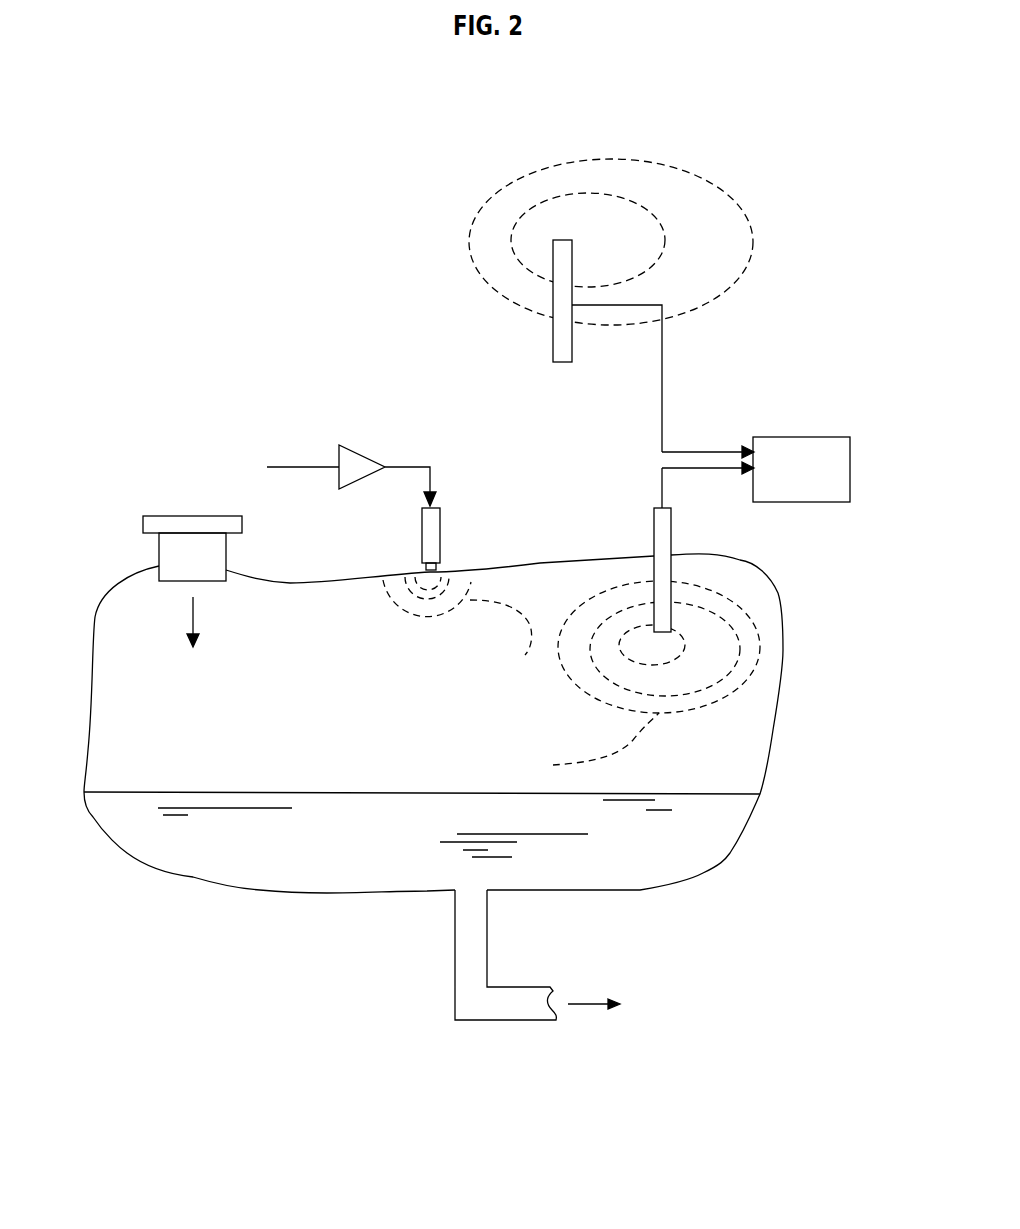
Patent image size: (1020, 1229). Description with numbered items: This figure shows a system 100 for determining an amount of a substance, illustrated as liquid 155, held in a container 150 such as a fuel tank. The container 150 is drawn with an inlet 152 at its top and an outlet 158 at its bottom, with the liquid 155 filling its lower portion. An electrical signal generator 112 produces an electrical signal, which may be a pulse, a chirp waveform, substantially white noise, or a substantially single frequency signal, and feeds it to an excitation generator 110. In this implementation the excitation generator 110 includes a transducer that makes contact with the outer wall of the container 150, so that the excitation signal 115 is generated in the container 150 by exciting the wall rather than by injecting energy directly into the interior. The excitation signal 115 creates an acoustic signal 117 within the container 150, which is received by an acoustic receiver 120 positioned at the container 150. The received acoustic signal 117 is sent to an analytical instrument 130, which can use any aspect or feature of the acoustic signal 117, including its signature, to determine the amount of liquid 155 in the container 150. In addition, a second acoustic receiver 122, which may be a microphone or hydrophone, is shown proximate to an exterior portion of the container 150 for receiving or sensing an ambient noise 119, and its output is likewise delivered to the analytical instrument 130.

The system 100 is at (117, 1037).
The excitation generator 110 is at (440, 550).
The electrical signal generator 112 is at (356, 452).
The excitation signal 115 is at (457, 636).
The acoustic signal 117 is at (628, 676).
The ambient noise 119 is at (745, 277).
The acoustic receiver 120 is at (671, 552).
The acoustic receiver 122 is at (553, 338).
The analytical instrument 130 is at (803, 437).
The container 150 is at (772, 760).
The inlet 152 is at (159, 557).
The liquid 155 is at (653, 875).
The outlet 158 is at (487, 975).